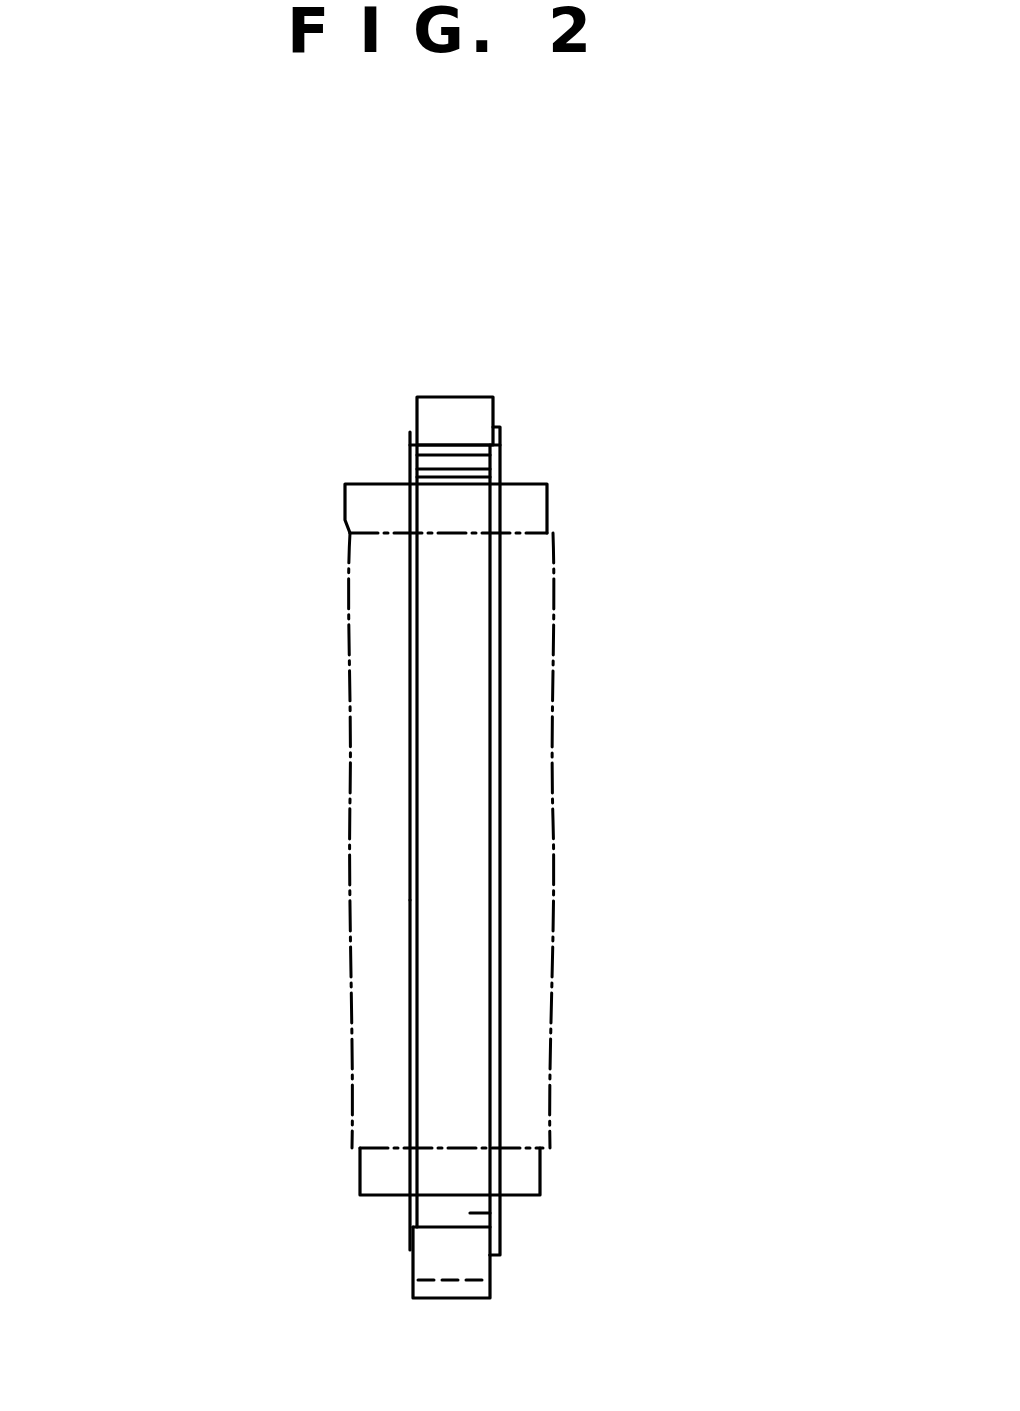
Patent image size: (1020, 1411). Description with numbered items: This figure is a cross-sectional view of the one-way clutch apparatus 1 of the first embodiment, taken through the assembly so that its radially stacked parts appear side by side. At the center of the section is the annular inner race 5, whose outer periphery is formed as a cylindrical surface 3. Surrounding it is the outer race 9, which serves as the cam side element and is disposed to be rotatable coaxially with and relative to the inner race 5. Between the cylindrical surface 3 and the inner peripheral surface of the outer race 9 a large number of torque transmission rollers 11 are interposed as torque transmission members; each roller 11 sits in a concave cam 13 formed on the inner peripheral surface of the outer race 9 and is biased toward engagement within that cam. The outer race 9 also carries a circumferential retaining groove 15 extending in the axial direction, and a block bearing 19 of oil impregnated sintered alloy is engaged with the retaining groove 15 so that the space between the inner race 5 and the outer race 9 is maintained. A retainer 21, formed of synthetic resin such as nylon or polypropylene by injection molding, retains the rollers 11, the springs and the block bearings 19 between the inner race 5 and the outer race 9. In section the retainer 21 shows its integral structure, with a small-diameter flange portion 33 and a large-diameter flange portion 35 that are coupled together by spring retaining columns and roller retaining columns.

The one-way clutch apparatus 1 is at (133, 413).
The cylindrical surface 3 is at (500, 458).
The inner race 5 is at (553, 615).
The outer race 9 is at (458, 396).
The torque transmission roller 11 is at (490, 1218).
The concave cam 13 is at (448, 1225).
The circumferential retaining groove 15 is at (411, 433).
The block bearing 19 is at (465, 472).
The retainer 21 is at (409, 750).
The small-diameter flange portion 33 is at (493, 980).
The large-diameter flange portion 35 is at (410, 1003).